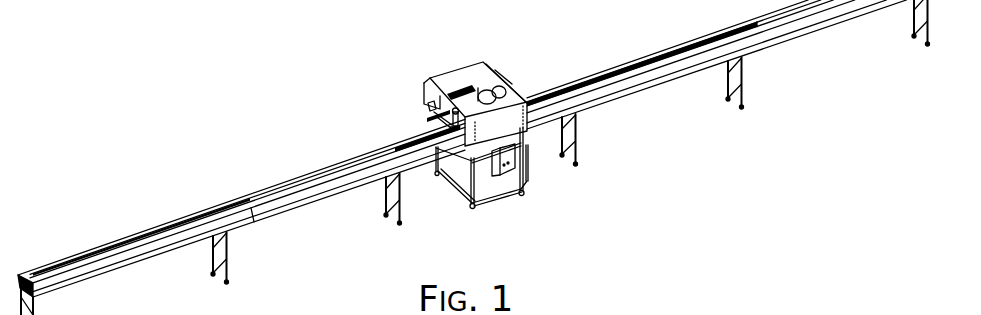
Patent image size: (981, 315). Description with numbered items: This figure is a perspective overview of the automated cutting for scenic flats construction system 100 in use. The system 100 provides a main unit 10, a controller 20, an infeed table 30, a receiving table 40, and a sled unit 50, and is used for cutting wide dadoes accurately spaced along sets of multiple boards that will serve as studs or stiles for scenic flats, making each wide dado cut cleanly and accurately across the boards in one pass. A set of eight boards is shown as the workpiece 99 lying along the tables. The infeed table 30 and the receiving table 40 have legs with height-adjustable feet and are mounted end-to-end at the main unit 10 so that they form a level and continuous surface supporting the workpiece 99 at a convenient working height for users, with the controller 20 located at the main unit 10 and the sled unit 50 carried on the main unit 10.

The automated cutting for scenic flats construction system 100 is at (335, 45).
The main unit 10 is at (437, 64).
The controller 20 is at (511, 157).
The infeed table 30 is at (653, 127).
The receiving table 40 is at (318, 225).
The sled unit 50 is at (463, 84).
The workpiece 99 is at (623, 75).